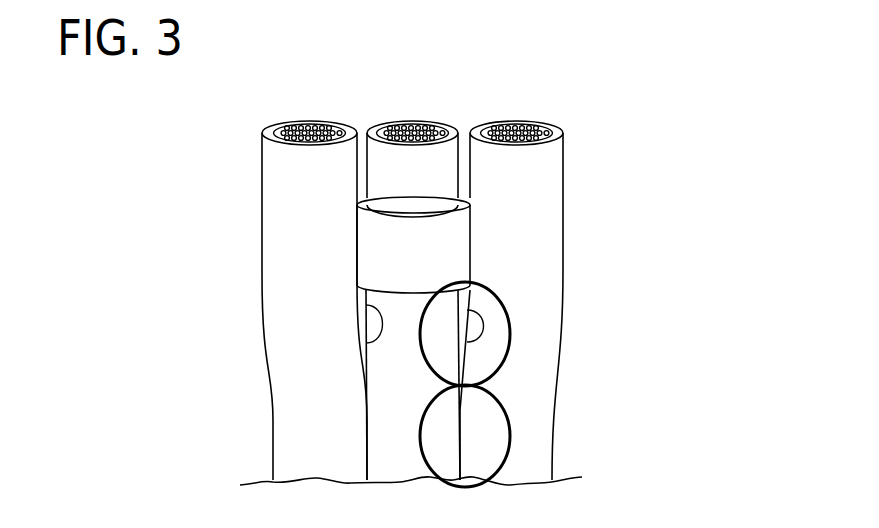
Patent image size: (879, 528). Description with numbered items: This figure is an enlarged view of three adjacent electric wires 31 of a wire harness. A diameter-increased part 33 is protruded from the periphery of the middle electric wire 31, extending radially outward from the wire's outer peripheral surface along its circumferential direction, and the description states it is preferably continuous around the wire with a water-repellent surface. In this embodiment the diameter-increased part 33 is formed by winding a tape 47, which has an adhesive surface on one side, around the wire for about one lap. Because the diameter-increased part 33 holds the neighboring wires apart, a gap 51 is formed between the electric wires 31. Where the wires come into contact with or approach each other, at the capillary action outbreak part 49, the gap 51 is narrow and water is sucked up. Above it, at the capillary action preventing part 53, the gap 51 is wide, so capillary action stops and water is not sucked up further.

The electric wire 31 is at (382, 123).
The diameter-increased part 33 is at (338, 240).
The tape 47 is at (368, 267).
The capillary action outbreak part 49 is at (510, 437).
The gap 51 is at (473, 334).
The capillary action preventing part 53 is at (510, 318).